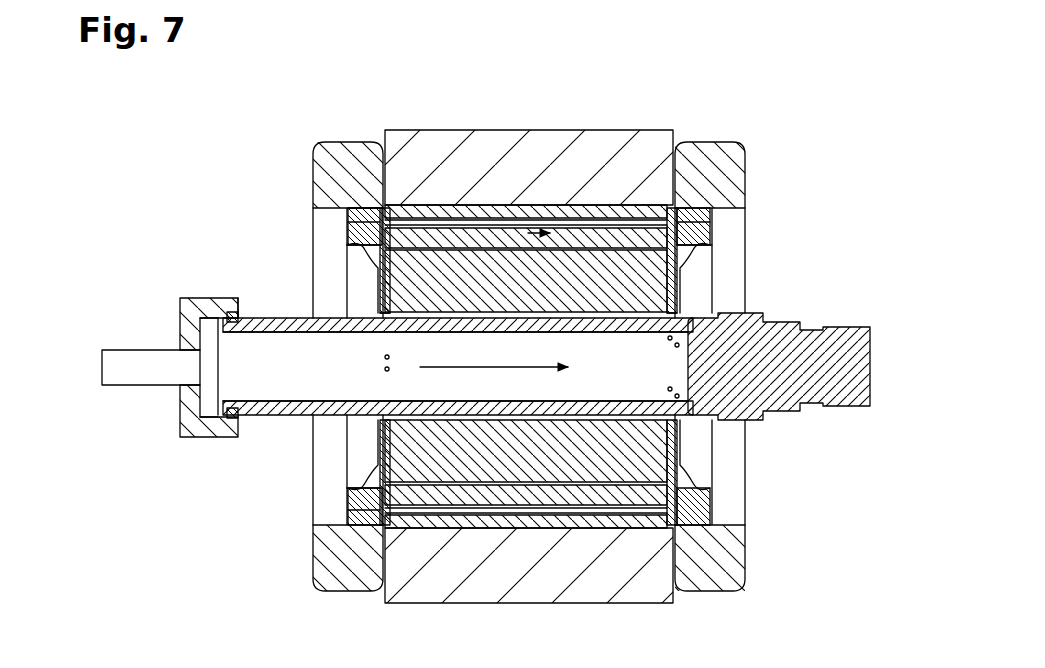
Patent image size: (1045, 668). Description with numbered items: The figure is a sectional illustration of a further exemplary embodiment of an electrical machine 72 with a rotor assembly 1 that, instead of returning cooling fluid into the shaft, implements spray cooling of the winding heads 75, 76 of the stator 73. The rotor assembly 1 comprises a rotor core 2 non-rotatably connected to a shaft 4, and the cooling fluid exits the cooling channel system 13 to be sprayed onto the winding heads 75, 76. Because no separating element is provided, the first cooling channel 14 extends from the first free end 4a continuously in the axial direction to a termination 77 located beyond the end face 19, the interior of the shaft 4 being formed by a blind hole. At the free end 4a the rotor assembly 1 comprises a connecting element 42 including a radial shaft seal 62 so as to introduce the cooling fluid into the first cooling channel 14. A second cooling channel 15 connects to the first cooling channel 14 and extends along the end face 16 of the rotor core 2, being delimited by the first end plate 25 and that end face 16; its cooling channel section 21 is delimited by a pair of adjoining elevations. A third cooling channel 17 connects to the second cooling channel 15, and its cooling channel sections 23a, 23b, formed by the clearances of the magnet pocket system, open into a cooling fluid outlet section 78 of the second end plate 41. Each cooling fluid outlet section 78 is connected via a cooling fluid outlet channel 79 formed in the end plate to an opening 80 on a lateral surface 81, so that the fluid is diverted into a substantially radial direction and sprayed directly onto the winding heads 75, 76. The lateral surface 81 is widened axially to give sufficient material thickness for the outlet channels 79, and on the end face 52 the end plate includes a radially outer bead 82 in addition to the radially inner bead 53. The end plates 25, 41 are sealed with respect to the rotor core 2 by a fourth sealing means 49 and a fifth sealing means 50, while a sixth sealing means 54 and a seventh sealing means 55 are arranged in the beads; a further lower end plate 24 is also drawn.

The rotor assembly 1 is at (850, 310).
The rotor core 2 is at (456, 212).
The shaft 4 is at (866, 350).
The first free end 4a is at (240, 296).
The cooling channel system 13 is at (366, 278).
The first cooling channel 14 is at (542, 380).
The second cooling channel 15 is at (380, 286).
The end face 16 is at (375, 490).
The third cooling channel 17 is at (520, 225).
The end face 19 is at (688, 433).
The cooling channel section 21 is at (372, 250).
The cooling channel section 23a is at (582, 210).
The cooling channel section 23b is at (503, 520).
The end plate 24 is at (424, 520).
The first end plate 25 is at (356, 198).
The second end plate 41 is at (700, 175).
The connecting element 42 is at (178, 310).
The fourth sealing means 49 is at (388, 205).
The fifth sealing means 50 is at (670, 205).
The end face 52 is at (370, 467).
The bead 53 is at (370, 310).
The sixth sealing means 54 is at (348, 348).
The seventh sealing means 55 is at (700, 305).
The radial shaft seal 62 is at (233, 440).
The electrical machine 72 is at (800, 108).
The stator 73 is at (622, 128).
The winding head 75 is at (338, 165).
The winding head 76 is at (725, 165).
The termination 77 is at (686, 368).
The cooling fluid outlet section 78 is at (712, 243).
The cooling fluid outlet channel 79 is at (708, 222).
The opening 80 is at (712, 198).
The lateral surface 81 is at (352, 164).
The radially outer bead 82 is at (350, 212).